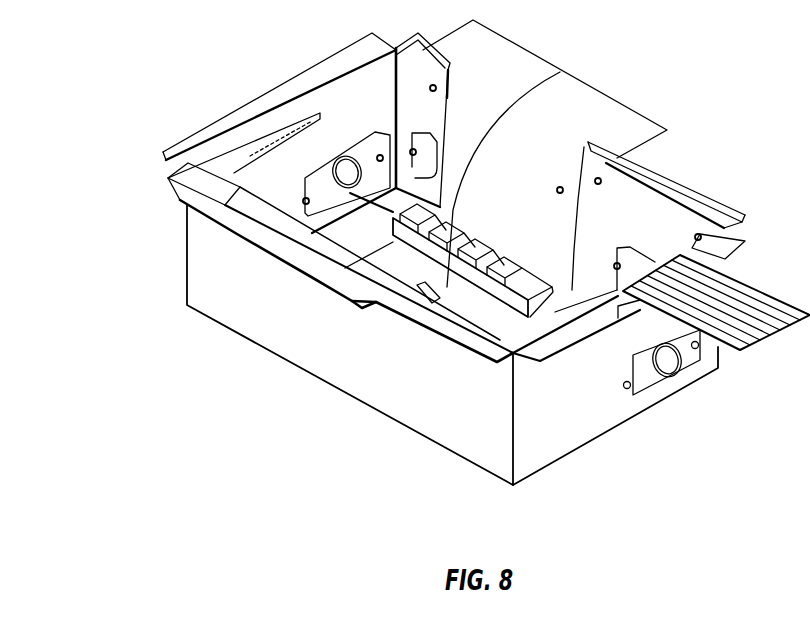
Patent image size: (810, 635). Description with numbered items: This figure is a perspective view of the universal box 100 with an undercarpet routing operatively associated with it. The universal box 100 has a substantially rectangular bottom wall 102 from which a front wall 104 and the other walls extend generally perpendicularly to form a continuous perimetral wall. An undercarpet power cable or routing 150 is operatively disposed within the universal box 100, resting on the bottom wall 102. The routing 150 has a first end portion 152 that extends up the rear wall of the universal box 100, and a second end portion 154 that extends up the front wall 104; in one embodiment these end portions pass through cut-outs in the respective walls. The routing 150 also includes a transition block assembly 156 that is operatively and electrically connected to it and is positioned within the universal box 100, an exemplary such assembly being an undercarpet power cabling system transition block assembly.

The universal box 100 is at (189, 64).
The bottom wall 102 is at (700, 373).
The front wall 104 is at (245, 323).
The undercarpet power cable or routing 150 is at (562, 74).
The first end portion 152 is at (580, 173).
The second end portion 154 is at (233, 236).
The transition block assembly 156 is at (500, 290).